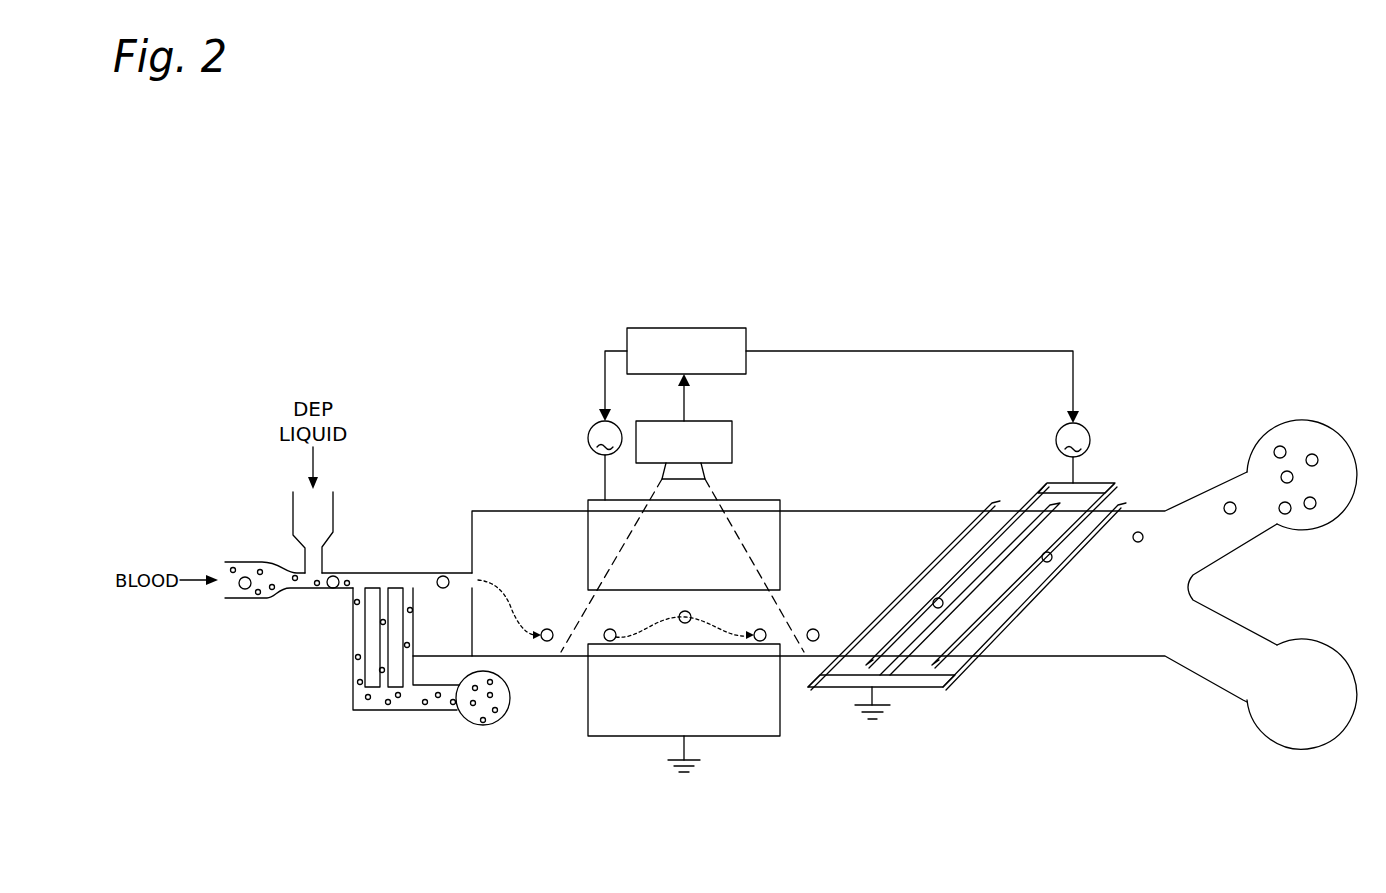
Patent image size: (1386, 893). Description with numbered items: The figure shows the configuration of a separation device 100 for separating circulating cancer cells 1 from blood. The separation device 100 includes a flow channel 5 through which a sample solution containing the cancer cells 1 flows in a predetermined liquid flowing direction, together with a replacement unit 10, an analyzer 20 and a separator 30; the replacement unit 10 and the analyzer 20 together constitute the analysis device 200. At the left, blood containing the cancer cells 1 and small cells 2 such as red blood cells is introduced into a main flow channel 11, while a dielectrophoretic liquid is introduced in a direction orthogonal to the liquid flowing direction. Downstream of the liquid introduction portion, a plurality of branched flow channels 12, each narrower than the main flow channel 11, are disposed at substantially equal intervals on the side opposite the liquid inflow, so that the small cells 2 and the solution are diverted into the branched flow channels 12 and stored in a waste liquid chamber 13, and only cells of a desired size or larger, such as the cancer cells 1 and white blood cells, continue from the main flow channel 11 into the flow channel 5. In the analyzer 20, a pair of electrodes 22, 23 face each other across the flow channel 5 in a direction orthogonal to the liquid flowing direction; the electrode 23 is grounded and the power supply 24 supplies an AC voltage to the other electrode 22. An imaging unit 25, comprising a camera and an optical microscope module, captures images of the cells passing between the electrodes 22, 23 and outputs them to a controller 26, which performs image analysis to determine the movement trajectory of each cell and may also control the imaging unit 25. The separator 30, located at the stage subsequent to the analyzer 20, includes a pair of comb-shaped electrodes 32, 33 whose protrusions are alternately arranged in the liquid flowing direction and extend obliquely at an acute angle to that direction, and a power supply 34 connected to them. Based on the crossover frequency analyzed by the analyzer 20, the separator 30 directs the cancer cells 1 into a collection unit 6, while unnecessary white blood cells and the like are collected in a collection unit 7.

The circulating cancer cell 1 is at (244, 577).
The small cell 2 is at (262, 568).
The flow channel 5 is at (491, 510).
The collection unit 6 is at (1250, 452).
The collection unit 7 is at (1248, 723).
The replacement unit 10 is at (350, 252).
The main flow channel 11 is at (381, 570).
The branched flow channel 12 is at (352, 640).
The waste liquid chamber 13 is at (483, 726).
The analyzer 20 is at (657, 252).
The electrode 22 is at (588, 545).
The electrode 23 is at (588, 689).
The power supply 24 is at (588, 438).
The imaging unit 25 is at (732, 438).
The controller 26 is at (684, 328).
The separator 30 is at (1040, 252).
The electrode 32 is at (1027, 500).
The electrode 33 is at (962, 528).
The power supply 34 is at (1090, 440).
The separation device 100 is at (1217, 143).
The analysis device 200 is at (330, 168).